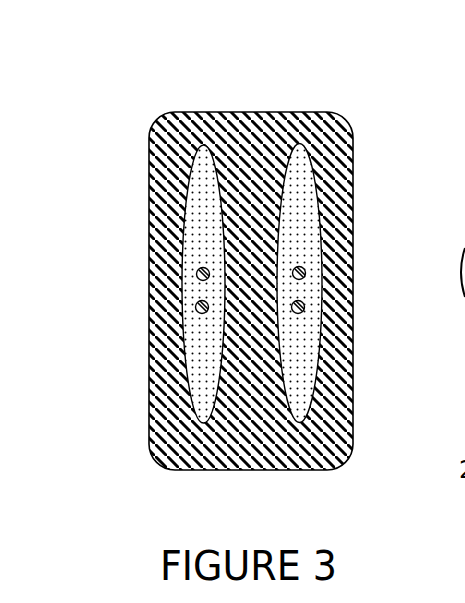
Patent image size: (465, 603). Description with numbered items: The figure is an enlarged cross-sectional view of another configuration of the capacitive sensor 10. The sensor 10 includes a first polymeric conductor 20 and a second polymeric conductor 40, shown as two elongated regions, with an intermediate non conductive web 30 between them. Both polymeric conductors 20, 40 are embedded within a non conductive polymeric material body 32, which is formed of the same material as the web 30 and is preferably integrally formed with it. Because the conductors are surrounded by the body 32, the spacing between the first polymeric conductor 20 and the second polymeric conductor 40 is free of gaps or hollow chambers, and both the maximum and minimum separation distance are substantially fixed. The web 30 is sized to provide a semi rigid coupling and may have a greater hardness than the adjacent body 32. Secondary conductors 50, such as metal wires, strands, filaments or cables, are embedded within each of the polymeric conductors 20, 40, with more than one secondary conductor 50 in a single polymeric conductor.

The capacitive sensor 10 is at (227, 262).
The first polymeric conductor 20 is at (208, 147).
The non conductive web 30 is at (260, 183).
The non conductive polymeric material body 32 is at (160, 458).
The second polymeric conductor 40 is at (308, 150).
The secondary conductor 50 is at (197, 270).